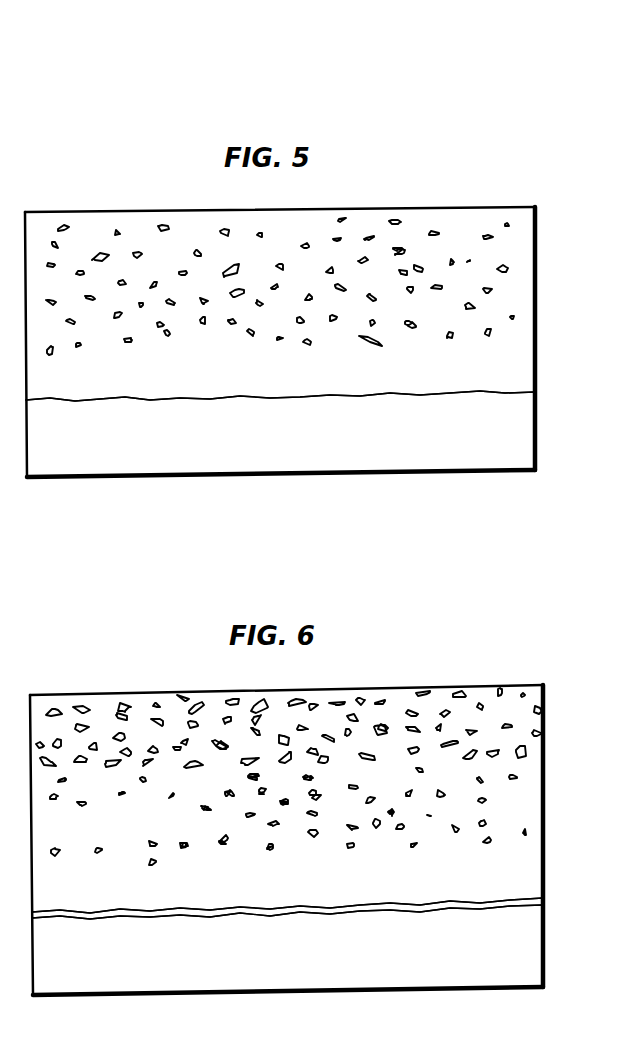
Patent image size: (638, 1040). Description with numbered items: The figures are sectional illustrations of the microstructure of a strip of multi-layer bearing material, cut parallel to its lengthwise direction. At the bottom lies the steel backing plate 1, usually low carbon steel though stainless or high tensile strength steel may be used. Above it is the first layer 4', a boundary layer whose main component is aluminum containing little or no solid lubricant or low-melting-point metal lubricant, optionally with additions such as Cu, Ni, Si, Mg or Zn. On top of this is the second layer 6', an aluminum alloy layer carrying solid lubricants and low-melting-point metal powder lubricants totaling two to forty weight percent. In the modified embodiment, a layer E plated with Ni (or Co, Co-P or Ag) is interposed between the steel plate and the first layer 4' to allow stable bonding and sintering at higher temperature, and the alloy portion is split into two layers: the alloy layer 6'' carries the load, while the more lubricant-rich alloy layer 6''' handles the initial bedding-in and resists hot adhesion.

In FIG. 5, the steel backing plate 1 is at (535, 443).
In FIG. 6, the steel backing plate 1 is at (543, 961).
In FIG. 5, the first layer 4' is at (300, 307).
In FIG. 6, the first layer 4' is at (309, 804).
In FIG. 5, the second layer 6' is at (311, 286).
In FIG. 6, the alloy layer 6'' is at (322, 816).
In FIG. 6, the alloy layer 6''' is at (317, 728).
In FIG. 6, the plated layer E is at (543, 907).